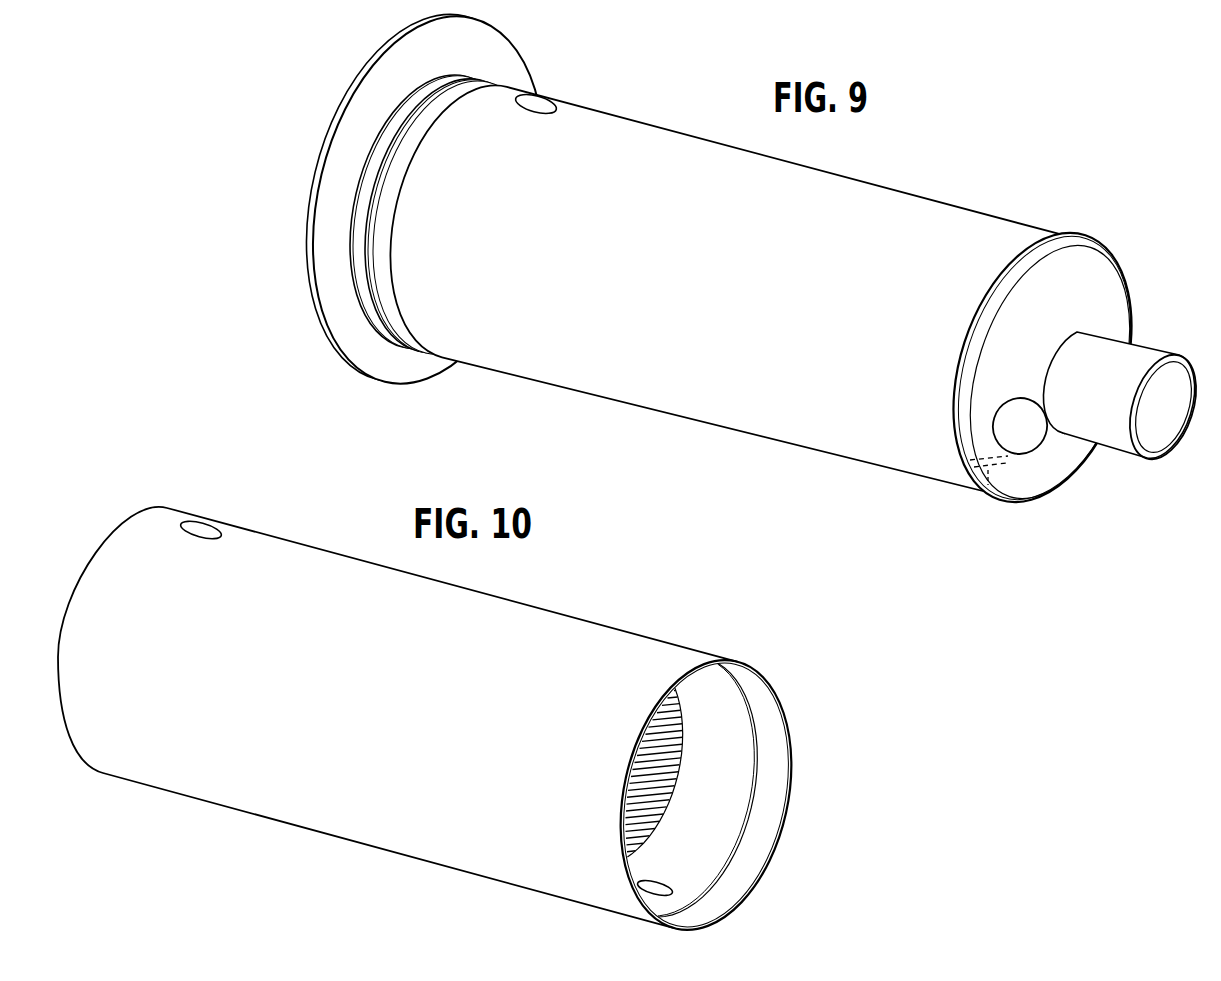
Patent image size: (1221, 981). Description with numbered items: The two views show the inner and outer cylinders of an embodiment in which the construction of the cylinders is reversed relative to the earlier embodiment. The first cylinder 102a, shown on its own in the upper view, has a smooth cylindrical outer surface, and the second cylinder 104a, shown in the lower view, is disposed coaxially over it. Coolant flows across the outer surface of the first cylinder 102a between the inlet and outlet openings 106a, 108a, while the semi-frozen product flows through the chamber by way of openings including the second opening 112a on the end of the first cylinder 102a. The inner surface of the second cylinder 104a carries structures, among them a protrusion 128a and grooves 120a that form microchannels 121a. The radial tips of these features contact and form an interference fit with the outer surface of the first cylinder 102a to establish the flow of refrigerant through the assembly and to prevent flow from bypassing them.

In FIG. 9, the first cylinder 102a is at (957, 224).
In FIG. 10, the second cylinder 104a is at (648, 648).
In FIG. 9, the inlet opening 106a is at (543, 96).
In FIG. 10, the inlet opening 106a is at (214, 523).
In FIG. 9, the outlet opening 108a is at (995, 507).
In FIG. 10, the outlet opening 108a is at (680, 883).
In FIG. 9, the second opening 112a is at (1035, 437).
In FIG. 10, the grooves 120a is at (658, 800).
In FIG. 10, the microchannels 121a is at (658, 757).
In FIG. 10, the protrusion 128a is at (750, 817).